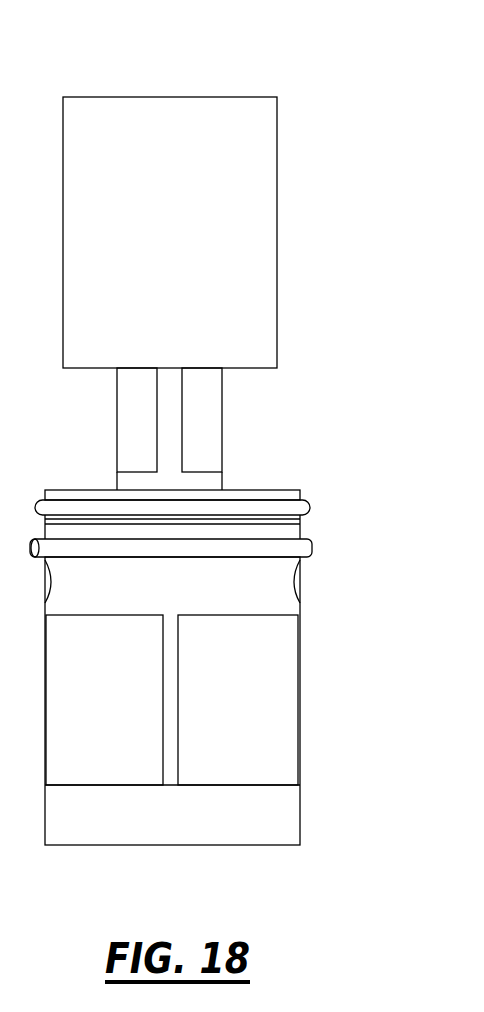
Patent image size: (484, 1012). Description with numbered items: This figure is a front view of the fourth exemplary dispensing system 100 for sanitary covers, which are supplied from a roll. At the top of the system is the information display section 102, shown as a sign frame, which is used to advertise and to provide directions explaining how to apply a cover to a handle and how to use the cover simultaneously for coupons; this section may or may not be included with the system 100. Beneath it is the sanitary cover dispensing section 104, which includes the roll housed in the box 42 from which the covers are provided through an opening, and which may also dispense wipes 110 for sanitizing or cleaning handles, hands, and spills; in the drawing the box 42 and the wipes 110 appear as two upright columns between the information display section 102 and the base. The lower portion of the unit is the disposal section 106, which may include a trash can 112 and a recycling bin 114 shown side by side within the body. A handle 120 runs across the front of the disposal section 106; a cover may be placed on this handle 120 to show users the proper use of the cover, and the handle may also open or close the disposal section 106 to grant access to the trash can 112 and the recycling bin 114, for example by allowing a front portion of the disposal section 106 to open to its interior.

The fourth exemplary dispensing system 100 is at (200, 54).
The information display section 102 is at (277, 178).
The box 42 is at (118, 392).
The wipes 110 is at (224, 418).
The sanitary cover dispensing section 104 is at (241, 451).
The handle 120 is at (298, 550).
The disposal section 106 is at (42, 657).
The recycling bin 114 is at (100, 612).
The trash can 112 is at (300, 678).